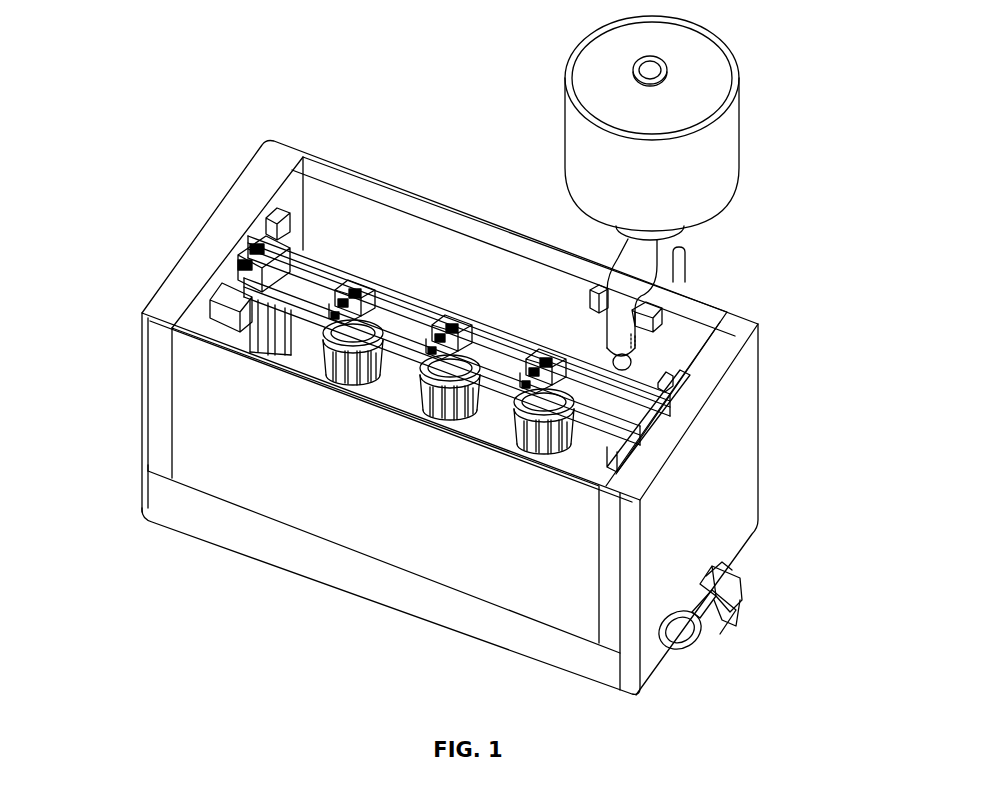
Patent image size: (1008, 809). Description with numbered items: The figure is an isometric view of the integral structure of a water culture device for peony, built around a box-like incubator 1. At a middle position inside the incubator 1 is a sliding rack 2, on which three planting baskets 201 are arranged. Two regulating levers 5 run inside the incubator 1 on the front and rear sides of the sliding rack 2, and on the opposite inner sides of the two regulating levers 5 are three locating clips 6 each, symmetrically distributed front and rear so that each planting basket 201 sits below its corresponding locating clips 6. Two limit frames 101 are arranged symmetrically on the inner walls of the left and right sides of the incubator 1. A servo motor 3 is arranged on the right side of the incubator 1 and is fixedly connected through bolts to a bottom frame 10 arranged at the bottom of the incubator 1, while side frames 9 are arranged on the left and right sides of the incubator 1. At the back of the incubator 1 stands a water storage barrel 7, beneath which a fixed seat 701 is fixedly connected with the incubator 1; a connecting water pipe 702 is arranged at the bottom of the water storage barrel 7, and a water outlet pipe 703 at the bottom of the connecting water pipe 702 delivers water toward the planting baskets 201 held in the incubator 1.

The incubator 1 is at (272, 482).
The bottom frame 10 is at (173, 503).
The limit frame 101 is at (237, 330).
The sliding rack 2 is at (268, 294).
The planting basket 201 is at (446, 418).
The servo motor 3 is at (738, 590).
The regulating lever 5 is at (315, 258).
The locating clip 6 is at (368, 288).
The water storage barrel 7 is at (689, 179).
The fixed seat 701 is at (690, 283).
The connecting water pipe 702 is at (662, 308).
The water outlet pipe 703 is at (648, 360).
The side frame 9 is at (715, 478).